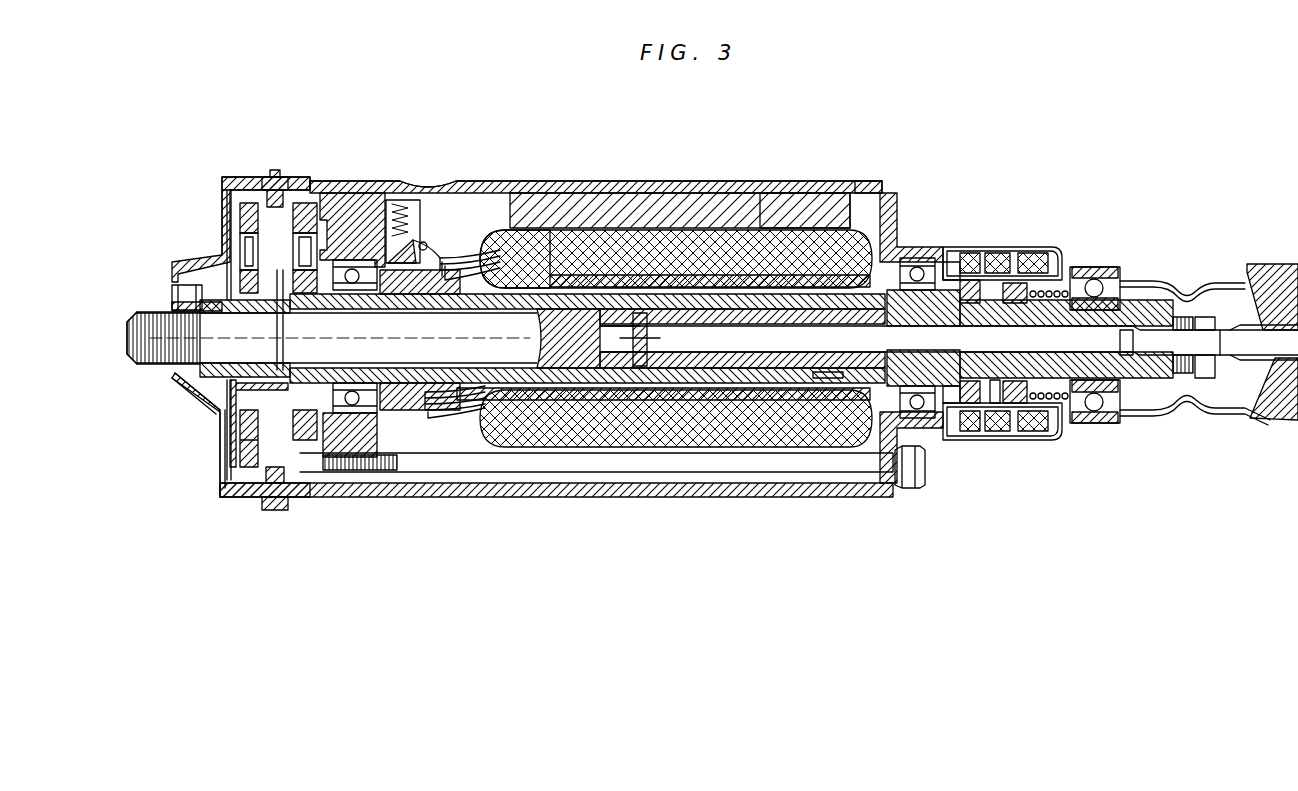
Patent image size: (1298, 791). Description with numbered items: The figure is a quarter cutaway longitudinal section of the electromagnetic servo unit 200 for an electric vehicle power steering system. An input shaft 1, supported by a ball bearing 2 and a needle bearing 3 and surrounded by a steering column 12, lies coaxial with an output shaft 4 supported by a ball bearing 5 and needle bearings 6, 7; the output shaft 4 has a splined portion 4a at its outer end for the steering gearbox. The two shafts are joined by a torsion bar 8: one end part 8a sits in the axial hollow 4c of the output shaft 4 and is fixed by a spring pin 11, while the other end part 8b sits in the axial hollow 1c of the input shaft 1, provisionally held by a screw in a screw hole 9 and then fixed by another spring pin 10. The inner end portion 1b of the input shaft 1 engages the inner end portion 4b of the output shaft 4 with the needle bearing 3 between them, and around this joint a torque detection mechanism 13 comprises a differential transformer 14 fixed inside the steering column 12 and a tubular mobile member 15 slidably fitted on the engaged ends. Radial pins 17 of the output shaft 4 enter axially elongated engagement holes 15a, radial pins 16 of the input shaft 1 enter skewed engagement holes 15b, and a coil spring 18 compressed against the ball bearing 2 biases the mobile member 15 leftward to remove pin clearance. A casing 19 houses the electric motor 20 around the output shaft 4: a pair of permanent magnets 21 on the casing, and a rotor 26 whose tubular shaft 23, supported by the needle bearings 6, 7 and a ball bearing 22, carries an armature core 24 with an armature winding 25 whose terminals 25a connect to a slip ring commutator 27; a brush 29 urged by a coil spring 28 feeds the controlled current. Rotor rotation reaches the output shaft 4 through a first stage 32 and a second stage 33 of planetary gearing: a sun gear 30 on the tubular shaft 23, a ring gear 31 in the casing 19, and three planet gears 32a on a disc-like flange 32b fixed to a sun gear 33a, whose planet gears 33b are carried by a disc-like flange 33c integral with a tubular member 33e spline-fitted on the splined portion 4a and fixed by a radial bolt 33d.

The input shaft 1 is at (1282, 320).
The axially inner end portion of the input shaft 1b is at (955, 403).
The axial hollow of the input shaft 1c is at (1130, 380).
The ball bearing 2 is at (1135, 281).
The needle bearing 3 is at (915, 258).
The output shaft 4 is at (515, 383).
The splined portion 4a is at (160, 325).
The axially inner end portion of the output shaft 4b is at (912, 488).
The axial hollow of the output shaft 4c is at (735, 355).
The ball bearing 5 is at (905, 262).
The needle bearing 6 is at (827, 383).
The needle bearing 7 is at (385, 388).
The torsion bar 8 is at (1045, 355).
The end part of the torsion bar 8a is at (600, 360).
The other end part of the torsion bar 8b is at (1180, 372).
The screw hole 9 is at (1182, 317).
The spring pin 10 is at (1205, 317).
The spring pin 11 is at (640, 370).
The steering column 12 is at (1108, 267).
The torque detection mechanism 13 is at (1042, 247).
The differential transformer 14 is at (970, 253).
The tubular mobile member 15 is at (965, 280).
The engagement holes 15a is at (1030, 431).
The engagement holes 15b is at (1012, 283).
The radial pins 16 is at (1000, 253).
The radial pins 17 is at (995, 403).
The coil spring 18 is at (1050, 290).
The casing 19 is at (587, 182).
The electric motor 20 is at (884, 163).
The permanent magnets 21 is at (775, 210).
The ball bearing 22 is at (338, 195).
The tubular shaft 23 is at (500, 210).
The armature core 24 is at (688, 240).
The armature winding 25 is at (735, 262).
The terminals 25a is at (450, 258).
The rotor 26 is at (505, 262).
The slip ring commutator 27 is at (440, 245).
The coil spring 28 is at (388, 230).
The brush 29 is at (410, 235).
The sun gear 30 is at (318, 440).
The ring gear 31 is at (322, 190).
The first stage of planetary gearing 32 is at (263, 190).
The planet gears 32a is at (297, 190).
The disc-like flange 32b is at (292, 510).
The second stage of planetary gearing 33 is at (230, 240).
The sun gear 33a is at (252, 383).
The planet gears 33b is at (212, 190).
The disc-like flange 33c is at (230, 448).
The radial bolt 33d is at (183, 285).
The tubular member 33e is at (195, 395).
The electromagnetic servo unit 200 is at (667, 132).